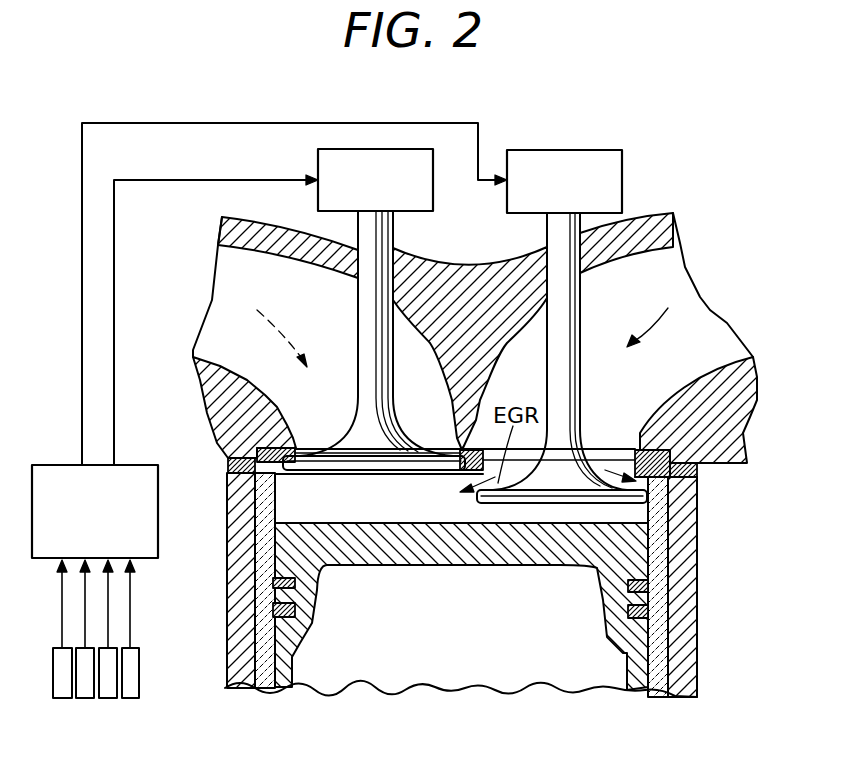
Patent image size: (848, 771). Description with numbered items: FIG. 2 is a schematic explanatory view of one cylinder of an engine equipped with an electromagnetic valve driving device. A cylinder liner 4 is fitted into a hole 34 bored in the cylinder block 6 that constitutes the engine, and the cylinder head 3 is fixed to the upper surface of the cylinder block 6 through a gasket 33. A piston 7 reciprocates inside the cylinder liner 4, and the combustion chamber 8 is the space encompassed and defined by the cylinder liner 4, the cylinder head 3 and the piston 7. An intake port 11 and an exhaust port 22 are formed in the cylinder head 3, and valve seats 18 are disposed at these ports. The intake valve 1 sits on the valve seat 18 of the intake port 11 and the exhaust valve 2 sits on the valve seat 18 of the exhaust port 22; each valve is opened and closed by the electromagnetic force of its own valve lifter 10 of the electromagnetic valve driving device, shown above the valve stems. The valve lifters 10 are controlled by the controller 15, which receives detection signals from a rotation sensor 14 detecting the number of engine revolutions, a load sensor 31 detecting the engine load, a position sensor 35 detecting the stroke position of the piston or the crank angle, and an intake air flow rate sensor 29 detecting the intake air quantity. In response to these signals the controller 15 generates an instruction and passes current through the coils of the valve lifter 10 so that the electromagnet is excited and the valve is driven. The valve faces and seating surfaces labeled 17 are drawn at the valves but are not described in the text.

The intake valve 1 is at (386, 440).
The exhaust valve 2 is at (582, 468).
The cylinder head 3 is at (478, 297).
The cylinder liner 4 is at (668, 623).
The cylinder block 6 is at (245, 652).
The piston 7 is at (375, 543).
The combustion chamber 8 is at (437, 508).
The valve lifter 10 is at (362, 162).
The intake port 11 is at (233, 283).
The rotation sensor 14 is at (130, 700).
The controller 15 is at (160, 510).
The valve face 17 is at (460, 448).
The valve seat 18 is at (300, 457).
The exhaust port 22 is at (672, 288).
The intake air flow rate sensor 29 is at (108, 700).
The load sensor 31 is at (87, 700).
The gasket 33 is at (227, 468).
The hole 34 is at (260, 588).
The position sensor 35 is at (63, 700).